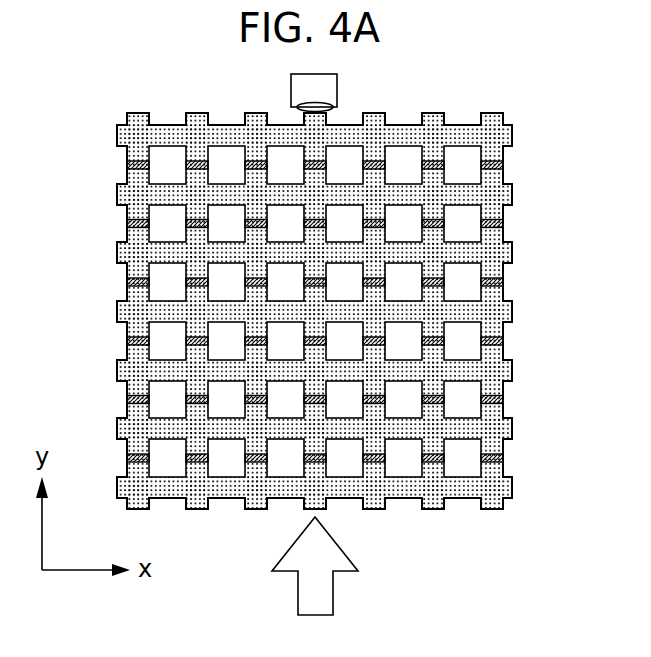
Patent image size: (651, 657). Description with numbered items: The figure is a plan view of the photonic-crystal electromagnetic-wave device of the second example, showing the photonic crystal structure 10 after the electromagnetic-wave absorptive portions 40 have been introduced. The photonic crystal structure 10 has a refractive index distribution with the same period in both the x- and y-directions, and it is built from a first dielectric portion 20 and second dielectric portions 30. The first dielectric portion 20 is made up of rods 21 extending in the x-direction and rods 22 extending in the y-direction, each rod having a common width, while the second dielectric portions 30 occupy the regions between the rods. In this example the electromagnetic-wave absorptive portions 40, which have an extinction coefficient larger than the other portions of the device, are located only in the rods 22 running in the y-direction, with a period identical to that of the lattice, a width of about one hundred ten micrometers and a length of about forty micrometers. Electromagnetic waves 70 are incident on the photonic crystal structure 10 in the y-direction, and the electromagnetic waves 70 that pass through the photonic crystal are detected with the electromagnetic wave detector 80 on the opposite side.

The photonic crystal structure 10 is at (463, 105).
The first dielectric portion 20 is at (508, 192).
The rods extending to the x-direction 21 is at (460, 255).
The rods extending to the y-direction 22 is at (492, 388).
The second dielectric portions 30 is at (160, 342).
The electromagnetic-wave absorptive portions 40 is at (128, 223).
The electromagnetic waves 70 is at (325, 603).
The electromagnetic wave detector 80 is at (300, 87).